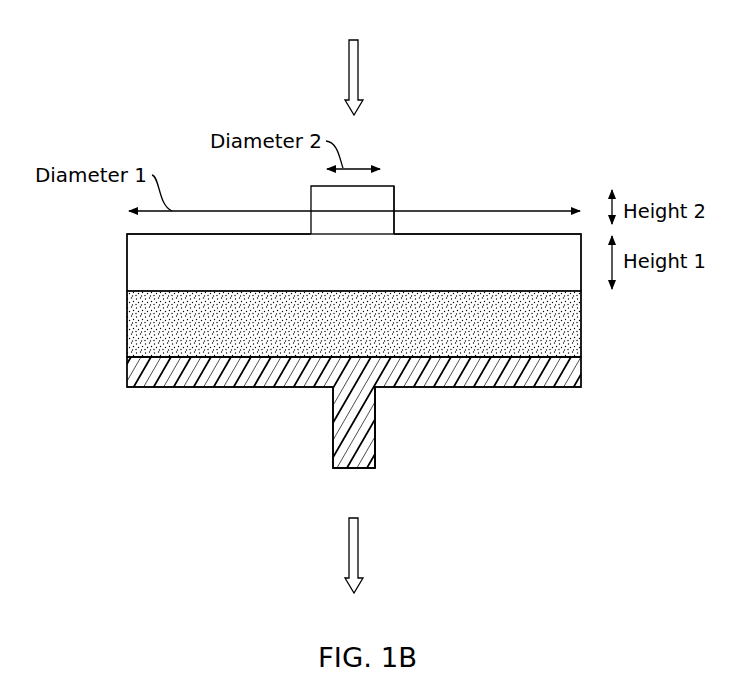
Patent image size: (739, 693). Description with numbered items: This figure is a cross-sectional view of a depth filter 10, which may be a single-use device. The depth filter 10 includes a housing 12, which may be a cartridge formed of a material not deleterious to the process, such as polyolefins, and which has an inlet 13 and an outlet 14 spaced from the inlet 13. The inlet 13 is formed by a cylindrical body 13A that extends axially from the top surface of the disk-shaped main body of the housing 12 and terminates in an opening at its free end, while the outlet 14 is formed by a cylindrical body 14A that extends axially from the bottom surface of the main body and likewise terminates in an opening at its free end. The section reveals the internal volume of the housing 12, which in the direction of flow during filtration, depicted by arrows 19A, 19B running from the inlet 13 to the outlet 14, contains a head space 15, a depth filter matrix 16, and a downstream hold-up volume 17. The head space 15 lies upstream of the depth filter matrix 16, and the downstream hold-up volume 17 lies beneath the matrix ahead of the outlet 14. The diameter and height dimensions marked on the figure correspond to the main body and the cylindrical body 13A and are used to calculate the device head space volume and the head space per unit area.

The depth filter 10 is at (558, 145).
The housing 12 is at (145, 369).
The inlet 13 is at (382, 186).
The cylindrical body 13A is at (394, 198).
The outlet 14 is at (341, 474).
The cylindrical body 14A is at (375, 427).
The head space 15 is at (152, 267).
The depth filter matrix 16 is at (152, 327).
The downstream hold-up volume 17 is at (143, 365).
The arrow 19A is at (358, 53).
The arrow 19B is at (358, 558).